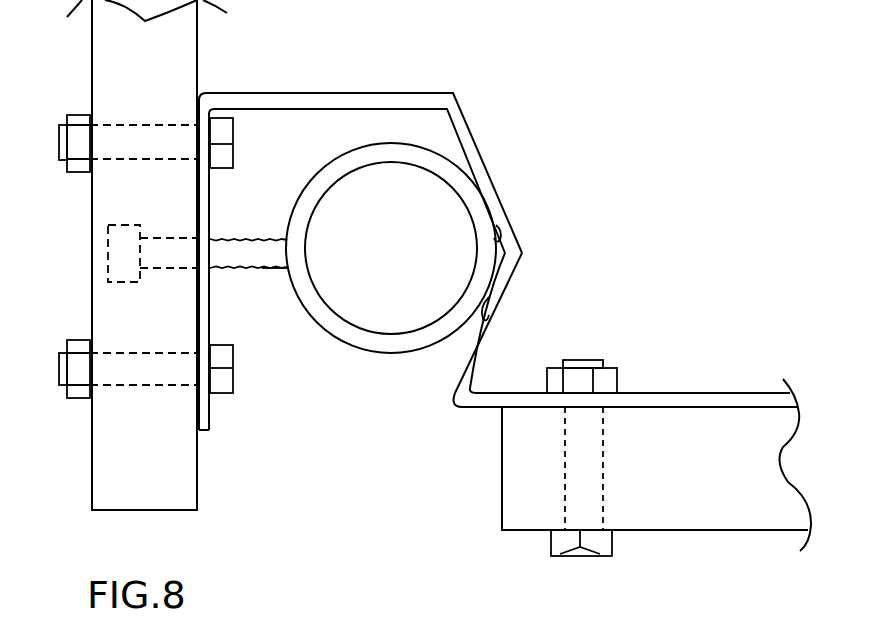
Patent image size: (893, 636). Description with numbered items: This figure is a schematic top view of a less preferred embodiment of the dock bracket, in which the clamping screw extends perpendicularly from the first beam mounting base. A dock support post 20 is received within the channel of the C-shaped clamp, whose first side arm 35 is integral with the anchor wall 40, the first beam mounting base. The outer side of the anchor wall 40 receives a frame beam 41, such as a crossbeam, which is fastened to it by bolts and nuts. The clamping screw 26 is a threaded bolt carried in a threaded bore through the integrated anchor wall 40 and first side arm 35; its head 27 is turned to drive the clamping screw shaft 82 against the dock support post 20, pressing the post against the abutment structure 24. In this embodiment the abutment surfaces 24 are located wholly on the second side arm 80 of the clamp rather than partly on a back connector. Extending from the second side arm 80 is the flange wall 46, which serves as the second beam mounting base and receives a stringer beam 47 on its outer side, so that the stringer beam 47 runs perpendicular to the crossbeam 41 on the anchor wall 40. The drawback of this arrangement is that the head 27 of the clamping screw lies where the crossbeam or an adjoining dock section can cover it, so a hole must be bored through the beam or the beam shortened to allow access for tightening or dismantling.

The dock support post 20 is at (381, 346).
The abutment structure 24 is at (497, 230).
The clamping screw 26 is at (238, 256).
The head 27 is at (128, 258).
The first side arm 35 is at (205, 190).
The anchor wall 40 is at (212, 413).
The frame beam 41 is at (130, 75).
The flange wall 46 is at (653, 400).
The stringer beam 47 is at (658, 508).
The second side arm 80 is at (508, 247).
The clamping screw shaft 82 is at (268, 272).